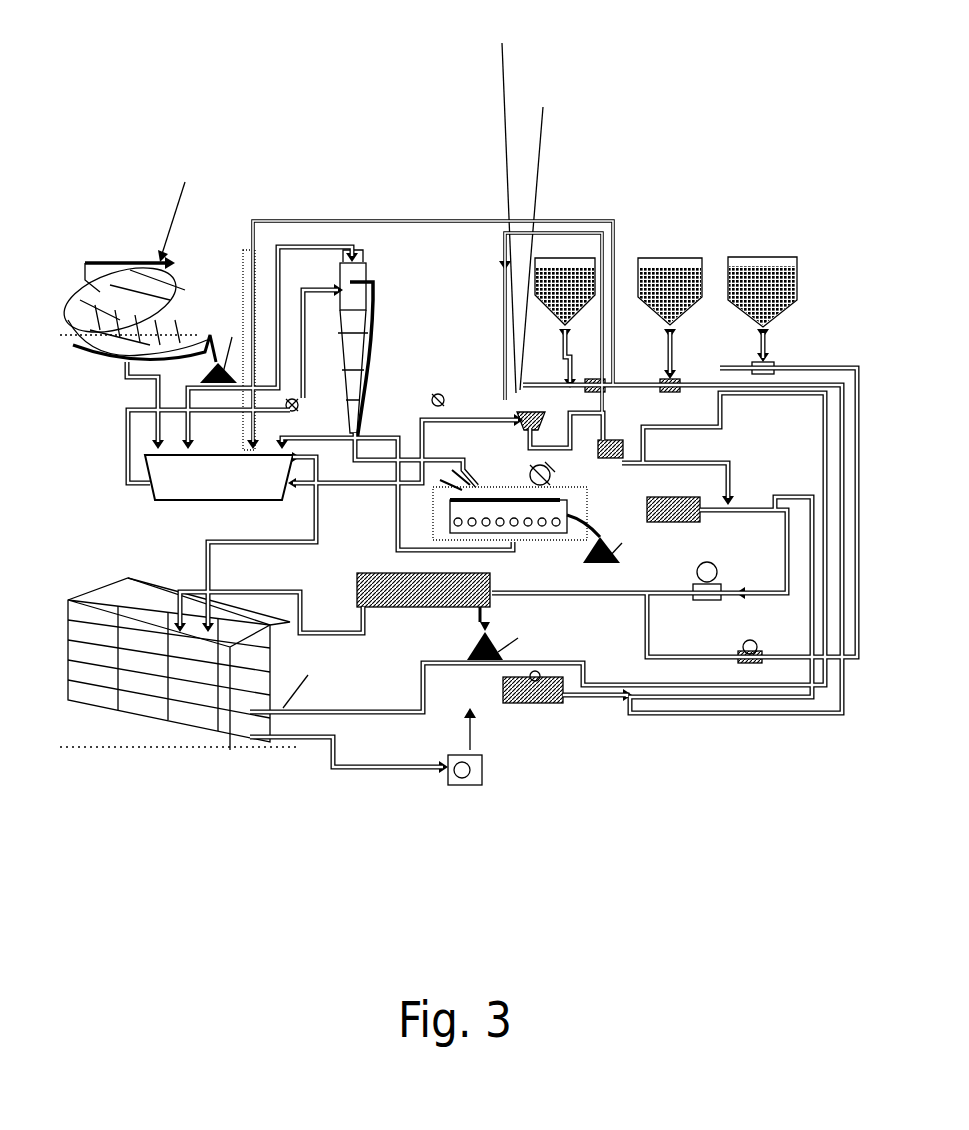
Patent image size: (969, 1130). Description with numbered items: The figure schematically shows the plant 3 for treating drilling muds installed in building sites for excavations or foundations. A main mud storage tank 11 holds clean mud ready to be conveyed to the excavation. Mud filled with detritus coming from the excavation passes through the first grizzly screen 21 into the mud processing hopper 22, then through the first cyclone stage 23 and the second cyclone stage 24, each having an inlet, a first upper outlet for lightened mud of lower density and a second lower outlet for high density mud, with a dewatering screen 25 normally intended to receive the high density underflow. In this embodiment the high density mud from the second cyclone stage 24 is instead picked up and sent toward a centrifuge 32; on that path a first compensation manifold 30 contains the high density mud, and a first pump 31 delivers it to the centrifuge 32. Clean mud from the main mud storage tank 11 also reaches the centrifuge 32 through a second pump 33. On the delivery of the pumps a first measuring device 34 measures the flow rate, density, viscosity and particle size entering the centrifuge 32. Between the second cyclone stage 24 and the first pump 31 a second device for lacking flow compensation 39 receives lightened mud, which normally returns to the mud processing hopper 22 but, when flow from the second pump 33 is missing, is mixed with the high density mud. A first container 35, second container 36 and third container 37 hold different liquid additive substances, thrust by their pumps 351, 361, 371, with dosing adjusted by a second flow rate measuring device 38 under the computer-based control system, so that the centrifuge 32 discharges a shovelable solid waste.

The plant 3 is at (370, 79).
The main mud storage tank 11 is at (137, 707).
The first grizzly screen 21 is at (147, 333).
The mud processing hopper 22 is at (122, 457).
The first cyclone stage 23 is at (343, 303).
The second cyclone stage 24 is at (505, 300).
The dewatering screen 25 is at (488, 523).
The first compensation manifold 30 is at (531, 412).
The first pump 31 is at (687, 512).
The centrifuge 32 is at (407, 592).
The second pump 33 is at (566, 703).
The first measuring device 34 is at (708, 592).
The first container 35 is at (581, 280).
The pump 351 is at (593, 384).
The second container 36 is at (684, 283).
The pump 361 is at (680, 380).
The third container 37 is at (760, 287).
The pump 371 is at (777, 368).
The second flow rate measuring device 38 is at (752, 660).
The second device for lacking flow compensation 39 is at (623, 435).